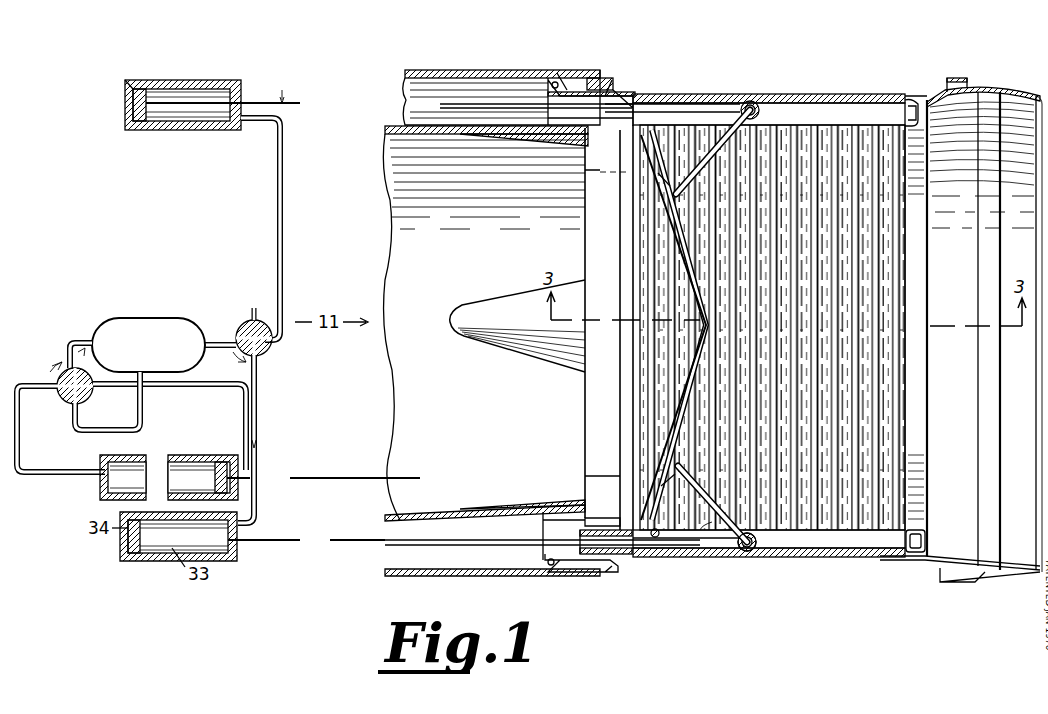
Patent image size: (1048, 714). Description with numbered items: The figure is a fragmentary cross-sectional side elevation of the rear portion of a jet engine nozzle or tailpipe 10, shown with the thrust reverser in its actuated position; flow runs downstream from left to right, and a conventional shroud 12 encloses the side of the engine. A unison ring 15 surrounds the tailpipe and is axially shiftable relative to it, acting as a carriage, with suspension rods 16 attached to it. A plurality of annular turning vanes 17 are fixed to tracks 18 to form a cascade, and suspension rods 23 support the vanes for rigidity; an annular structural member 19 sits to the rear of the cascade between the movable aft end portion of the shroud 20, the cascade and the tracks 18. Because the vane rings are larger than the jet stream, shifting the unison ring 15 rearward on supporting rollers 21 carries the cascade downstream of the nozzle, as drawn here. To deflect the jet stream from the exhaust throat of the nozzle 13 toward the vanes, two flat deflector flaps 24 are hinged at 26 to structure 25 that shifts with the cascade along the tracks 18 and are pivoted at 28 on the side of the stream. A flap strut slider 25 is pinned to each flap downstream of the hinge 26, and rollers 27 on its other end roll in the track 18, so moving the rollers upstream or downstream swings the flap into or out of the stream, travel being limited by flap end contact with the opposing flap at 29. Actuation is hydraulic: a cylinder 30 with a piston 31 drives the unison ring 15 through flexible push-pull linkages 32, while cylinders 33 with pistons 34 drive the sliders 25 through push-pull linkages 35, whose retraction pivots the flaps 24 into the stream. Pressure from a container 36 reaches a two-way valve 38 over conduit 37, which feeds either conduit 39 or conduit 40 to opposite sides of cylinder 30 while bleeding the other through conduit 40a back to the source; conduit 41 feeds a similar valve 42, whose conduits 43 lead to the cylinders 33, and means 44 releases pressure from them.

The jet engine nozzle or tailpipe 10 is at (630, 76).
The shroud 12 is at (470, 72).
The exhaust throat of the nozzle 13 is at (445, 278).
The unison ring 15 is at (608, 522).
The suspension rods 16 is at (590, 476).
The annular turning vanes 17 is at (832, 126).
The tracks 18 is at (842, 549).
The annular structural member 19 is at (918, 545).
The movable aft end portion of the shroud 20 is at (1020, 479).
The supporting rollers 21 is at (553, 568).
The suspension rods 23 is at (905, 330).
The deflector flaps 24 is at (680, 147).
The flap strut slider 25 is at (712, 522).
The hinge 26 is at (703, 504).
The rollers 27 is at (760, 547).
The pivot 28 is at (652, 537).
The flap end contact 29 is at (700, 323).
The hydraulic cylinder 30 is at (185, 480).
The piston 31 is at (214, 460).
The flexible push-pull linkages 32 is at (240, 468).
The hydraulic cylinders 33 is at (165, 112).
The piston 34 is at (128, 88).
The push-pull linkage 35 is at (270, 102).
The container 36 is at (158, 349).
The conduit 37 is at (82, 338).
The valve 38 is at (66, 400).
The conduit 39 is at (78, 478).
The conduit 40 is at (228, 384).
The conduit 40a is at (142, 410).
The conduit 41 is at (230, 345).
The valve 42 is at (272, 352).
The conduits 43 is at (256, 388).
The pressure release means 44 is at (252, 308).